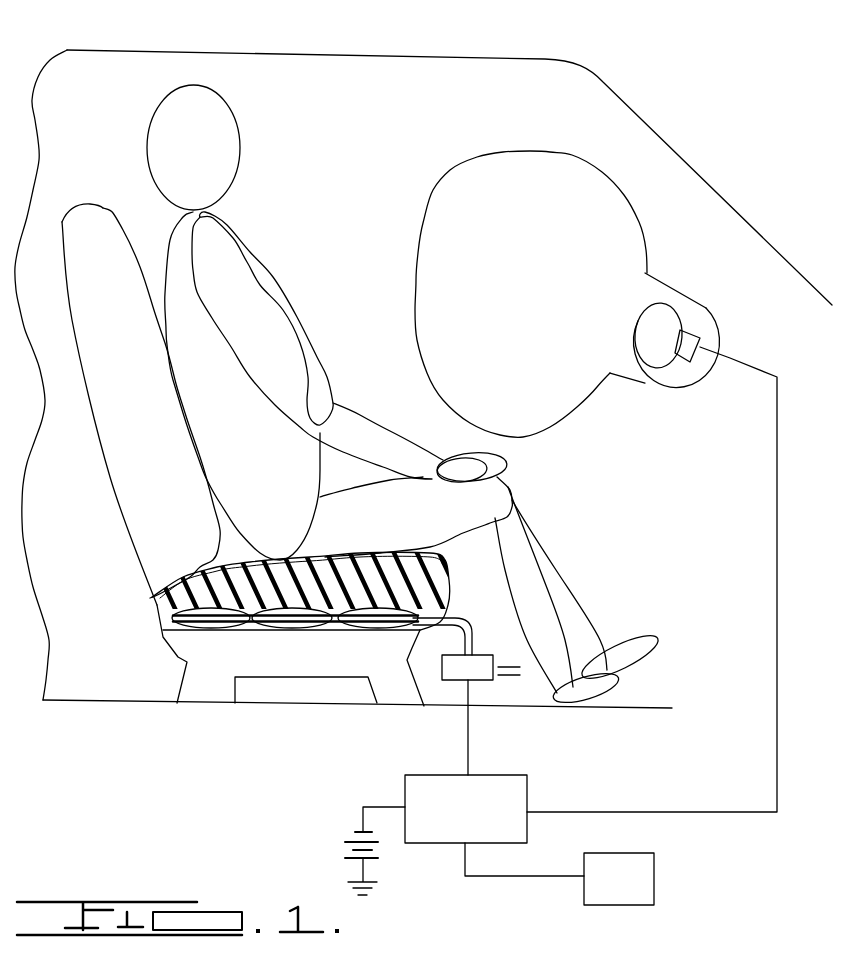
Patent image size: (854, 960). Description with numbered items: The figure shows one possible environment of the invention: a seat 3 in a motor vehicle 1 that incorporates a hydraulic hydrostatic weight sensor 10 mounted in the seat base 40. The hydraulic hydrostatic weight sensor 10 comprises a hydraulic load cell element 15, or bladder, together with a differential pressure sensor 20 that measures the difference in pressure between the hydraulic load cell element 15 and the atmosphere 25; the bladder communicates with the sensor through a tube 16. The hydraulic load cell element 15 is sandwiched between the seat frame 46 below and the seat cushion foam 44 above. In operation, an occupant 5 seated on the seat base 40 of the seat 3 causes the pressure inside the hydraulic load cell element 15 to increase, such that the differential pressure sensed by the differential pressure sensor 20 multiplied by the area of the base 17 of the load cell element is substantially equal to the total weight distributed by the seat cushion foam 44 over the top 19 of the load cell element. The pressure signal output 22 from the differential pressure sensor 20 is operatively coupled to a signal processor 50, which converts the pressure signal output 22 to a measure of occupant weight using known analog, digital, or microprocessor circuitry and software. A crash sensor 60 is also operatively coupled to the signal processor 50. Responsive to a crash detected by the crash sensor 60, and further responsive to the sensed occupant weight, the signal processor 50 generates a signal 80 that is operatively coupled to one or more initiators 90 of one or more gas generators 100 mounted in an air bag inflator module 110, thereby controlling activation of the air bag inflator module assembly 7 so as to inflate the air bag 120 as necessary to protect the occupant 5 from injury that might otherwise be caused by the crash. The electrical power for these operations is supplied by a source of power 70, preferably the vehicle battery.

The motor vehicle 1 is at (494, 58).
The seat 3 is at (106, 480).
The occupant 5 is at (249, 240).
The air bag inflator module assembly 7 is at (650, 165).
The hydraulic hydrostatic weight sensor 10 is at (295, 640).
The hydraulic load cell element 15 is at (216, 641).
The tube 16 is at (477, 644).
The base of the hydraulic load cell element 17 is at (252, 641).
The top of the hydraulic load cell element 19 is at (278, 641).
The differential pressure sensor 20 is at (453, 677).
The pressure signal output 22 is at (467, 758).
The atmosphere 25 is at (530, 667).
The seat base 40 is at (483, 550).
The seat cushion foam 44 is at (182, 594).
The seat frame 46 is at (350, 660).
The signal processor 50 is at (530, 797).
The crash sensor 60 is at (646, 888).
The source of power 70 is at (334, 848).
The signal 80 is at (778, 487).
The initiator 90 is at (702, 347).
The gas generator 100 is at (668, 304).
The air bag inflator module 110 is at (642, 386).
The air bag 120 is at (563, 160).